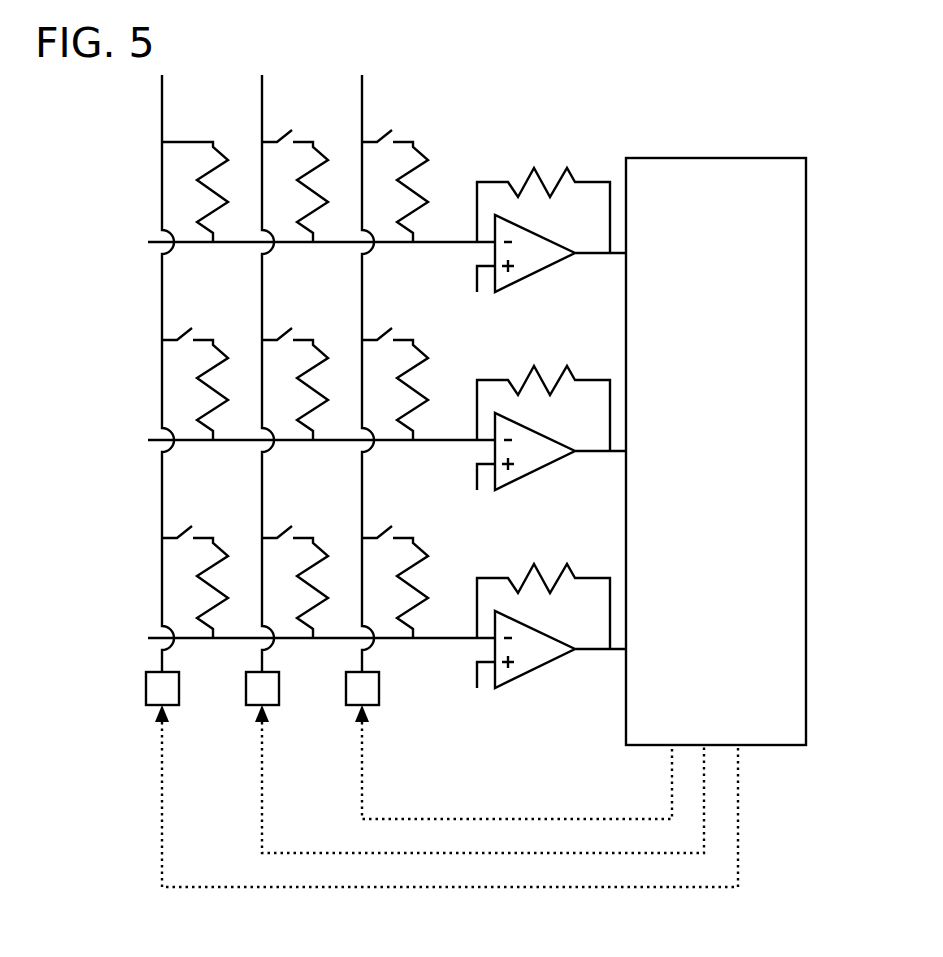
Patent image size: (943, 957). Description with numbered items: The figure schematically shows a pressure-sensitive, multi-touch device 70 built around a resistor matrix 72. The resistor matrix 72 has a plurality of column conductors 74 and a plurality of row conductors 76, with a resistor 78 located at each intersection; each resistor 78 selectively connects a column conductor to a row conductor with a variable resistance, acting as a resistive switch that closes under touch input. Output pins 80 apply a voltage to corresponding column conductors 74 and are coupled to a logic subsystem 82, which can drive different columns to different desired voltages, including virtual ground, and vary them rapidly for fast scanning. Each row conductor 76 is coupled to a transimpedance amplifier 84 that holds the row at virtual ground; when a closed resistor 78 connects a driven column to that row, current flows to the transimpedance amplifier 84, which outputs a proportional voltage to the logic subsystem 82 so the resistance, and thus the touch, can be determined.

The pressure-sensitive, multi-touch device 70 is at (577, 66).
The resistor matrix 72 is at (457, 126).
The column conductors 74 is at (403, 93).
The row conductors 76 is at (157, 634).
The resistors 78 is at (307, 340).
The output pins 80 is at (148, 684).
The logic subsystem 82 is at (703, 494).
The transimpedance amplifiers 84 is at (526, 694).